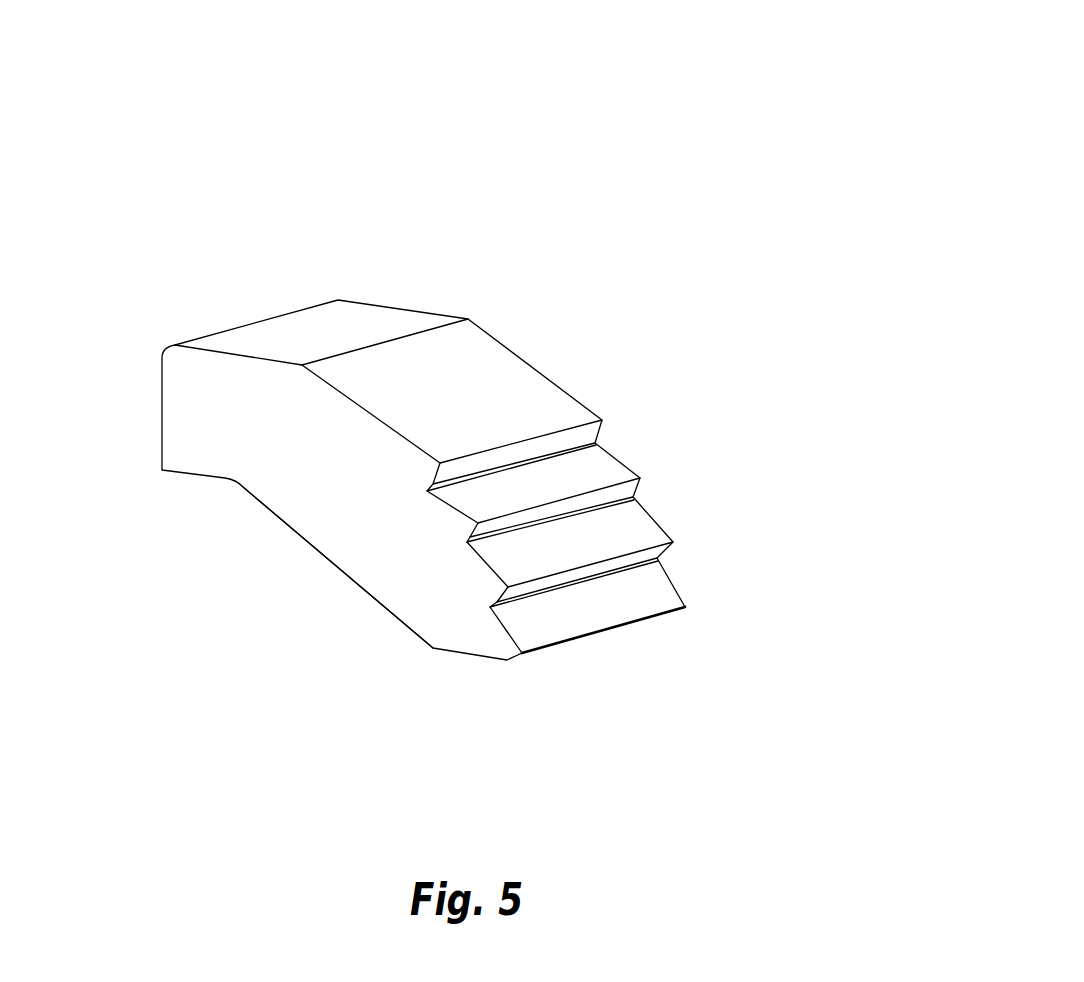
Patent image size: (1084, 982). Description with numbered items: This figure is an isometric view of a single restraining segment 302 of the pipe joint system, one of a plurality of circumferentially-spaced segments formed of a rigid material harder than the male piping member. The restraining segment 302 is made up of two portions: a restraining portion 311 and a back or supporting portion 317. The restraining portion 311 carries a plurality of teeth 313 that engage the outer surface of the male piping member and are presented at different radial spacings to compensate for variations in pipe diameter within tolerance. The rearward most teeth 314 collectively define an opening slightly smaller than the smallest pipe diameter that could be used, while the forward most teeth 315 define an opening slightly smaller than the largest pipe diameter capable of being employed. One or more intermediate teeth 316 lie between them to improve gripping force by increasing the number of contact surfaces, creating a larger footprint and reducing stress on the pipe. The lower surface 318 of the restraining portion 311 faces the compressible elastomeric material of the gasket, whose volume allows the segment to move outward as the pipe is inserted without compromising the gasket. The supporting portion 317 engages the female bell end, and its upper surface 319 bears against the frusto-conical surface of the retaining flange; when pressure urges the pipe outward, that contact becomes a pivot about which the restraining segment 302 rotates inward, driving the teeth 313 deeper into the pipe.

The restraining segment 302 is at (716, 95).
The restraining portion 311 is at (423, 530).
The teeth 313 is at (830, 265).
The rearward most teeth 314 is at (683, 608).
The forward most teeth 315 is at (597, 422).
The intermediate teeth 316 is at (643, 547).
The supporting portion 317 is at (183, 393).
The lower surface 318 is at (262, 510).
The upper surface 319 is at (333, 330).